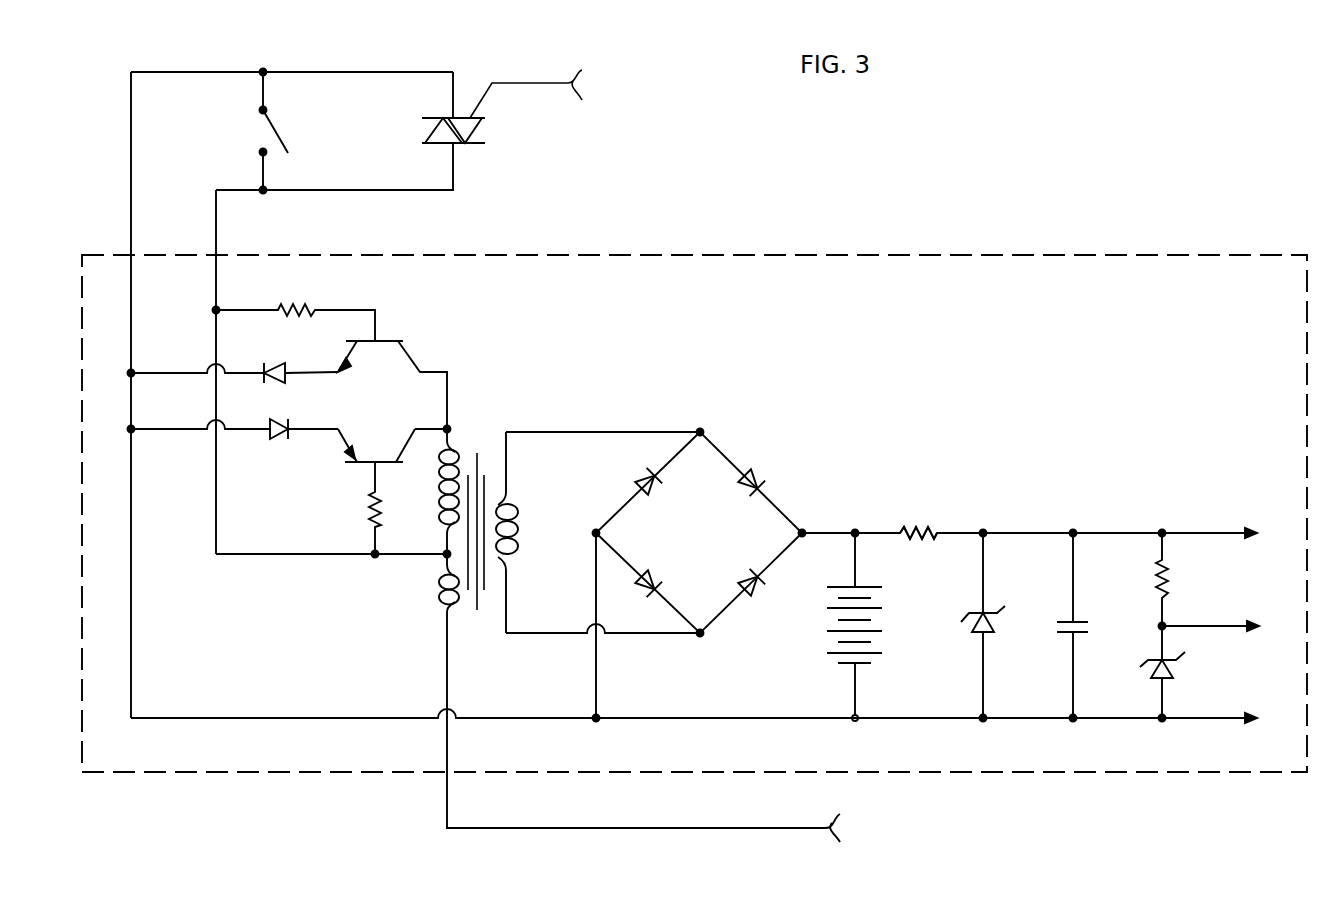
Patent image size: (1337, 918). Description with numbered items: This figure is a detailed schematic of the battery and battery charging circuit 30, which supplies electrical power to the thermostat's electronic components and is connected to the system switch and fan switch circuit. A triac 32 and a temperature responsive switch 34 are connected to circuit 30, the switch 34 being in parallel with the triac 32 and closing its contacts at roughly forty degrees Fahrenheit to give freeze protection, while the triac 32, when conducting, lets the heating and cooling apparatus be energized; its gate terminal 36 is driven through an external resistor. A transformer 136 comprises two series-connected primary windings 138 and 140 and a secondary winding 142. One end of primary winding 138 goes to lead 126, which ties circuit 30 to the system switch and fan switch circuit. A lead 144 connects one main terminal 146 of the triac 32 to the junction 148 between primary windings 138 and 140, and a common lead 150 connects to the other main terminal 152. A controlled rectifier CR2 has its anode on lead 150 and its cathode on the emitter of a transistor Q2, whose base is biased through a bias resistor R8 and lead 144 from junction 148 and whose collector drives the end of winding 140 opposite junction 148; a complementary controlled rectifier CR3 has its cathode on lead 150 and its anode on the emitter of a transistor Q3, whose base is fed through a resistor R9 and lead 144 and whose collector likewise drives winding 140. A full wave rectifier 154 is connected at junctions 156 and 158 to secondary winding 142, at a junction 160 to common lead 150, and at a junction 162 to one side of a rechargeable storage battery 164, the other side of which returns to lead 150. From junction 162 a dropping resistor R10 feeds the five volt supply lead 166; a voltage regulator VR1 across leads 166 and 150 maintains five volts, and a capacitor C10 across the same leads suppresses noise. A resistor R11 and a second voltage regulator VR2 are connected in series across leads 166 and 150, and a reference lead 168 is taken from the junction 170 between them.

The battery and battery charging circuit 30 is at (786, 251).
The triac 32 is at (473, 127).
The switch 34 is at (281, 128).
The gate terminal 36 is at (480, 91).
The lead 126 is at (635, 829).
The transformer 136 is at (477, 448).
The primary winding 138 is at (447, 601).
The primary winding 140 is at (437, 497).
The secondary winding 142 is at (520, 540).
The lead 144 is at (233, 555).
The main terminal 146 is at (453, 172).
The junction 148 is at (446, 560).
The lead 150 is at (508, 718).
The main terminal 152 is at (453, 88).
The full wave rectifier 154 is at (718, 547).
The junction 156 is at (703, 432).
The junction 158 is at (702, 636).
The junction 160 is at (600, 533).
The junction 162 is at (800, 533).
The rechargeable storage battery 164 is at (866, 586).
The lead 166 is at (1018, 533).
The lead 168 is at (1215, 627).
The junction 170 is at (1165, 623).
The resistor R9 is at (292, 306).
The transistor Q3 is at (380, 340).
The controlled rectifier CR3 is at (275, 361).
The controlled rectifier CR2 is at (283, 418).
The transistor Q2 is at (382, 458).
The bias resistor R8 is at (368, 497).
The dropping resistor R10 is at (905, 528).
The voltage regulator VR1 is at (1000, 612).
The capacitor C10 is at (1084, 620).
The resistor R11 is at (1170, 582).
The voltage regulator VR2 is at (1183, 656).